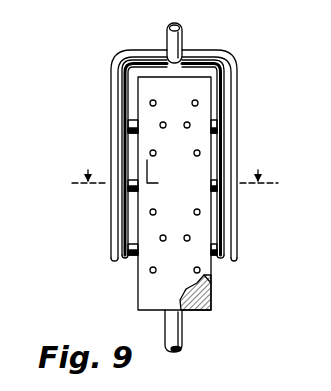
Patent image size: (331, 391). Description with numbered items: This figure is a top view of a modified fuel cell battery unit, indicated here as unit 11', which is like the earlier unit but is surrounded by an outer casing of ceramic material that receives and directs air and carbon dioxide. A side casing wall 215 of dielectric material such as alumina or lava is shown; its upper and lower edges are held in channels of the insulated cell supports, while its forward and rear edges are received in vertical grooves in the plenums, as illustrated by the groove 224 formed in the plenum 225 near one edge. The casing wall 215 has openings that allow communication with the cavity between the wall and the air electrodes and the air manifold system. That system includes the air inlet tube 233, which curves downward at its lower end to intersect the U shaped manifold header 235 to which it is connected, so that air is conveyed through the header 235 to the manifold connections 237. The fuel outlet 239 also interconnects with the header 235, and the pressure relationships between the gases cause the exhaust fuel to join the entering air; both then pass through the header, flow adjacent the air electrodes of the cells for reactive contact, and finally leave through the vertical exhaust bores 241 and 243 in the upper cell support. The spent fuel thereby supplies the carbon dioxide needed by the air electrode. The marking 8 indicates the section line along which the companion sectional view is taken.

The mounting assembly 11' is at (258, 32).
The section line 8- 8 is at (175, 164).
The side casing wall 215 is at (212, 281).
The groove 224 is at (209, 301).
The plenum 225 is at (196, 311).
The air inlet tube 233 is at (184, 37).
The U shaped manifold header 235 is at (118, 56).
The manifold connections 237 is at (135, 122).
The fuel outlet 239 is at (158, 70).
The vertical exhaust bore 241 is at (156, 153).
The vertical exhaust bore 243 is at (181, 153).